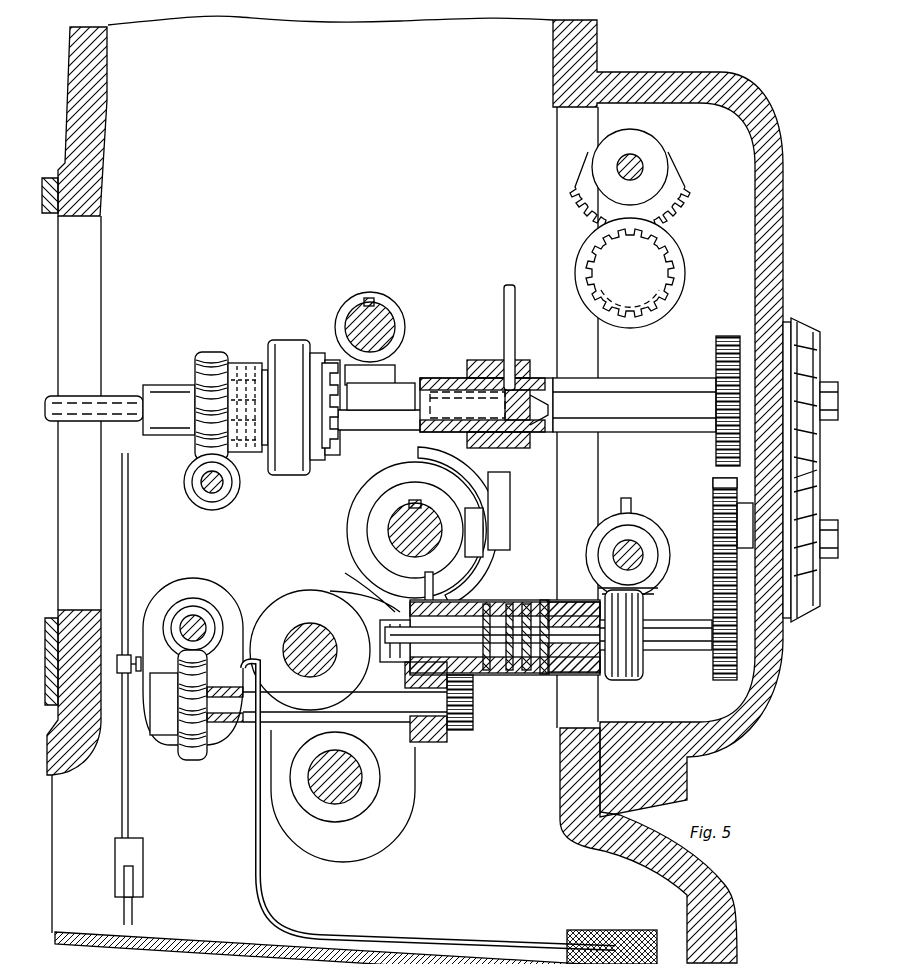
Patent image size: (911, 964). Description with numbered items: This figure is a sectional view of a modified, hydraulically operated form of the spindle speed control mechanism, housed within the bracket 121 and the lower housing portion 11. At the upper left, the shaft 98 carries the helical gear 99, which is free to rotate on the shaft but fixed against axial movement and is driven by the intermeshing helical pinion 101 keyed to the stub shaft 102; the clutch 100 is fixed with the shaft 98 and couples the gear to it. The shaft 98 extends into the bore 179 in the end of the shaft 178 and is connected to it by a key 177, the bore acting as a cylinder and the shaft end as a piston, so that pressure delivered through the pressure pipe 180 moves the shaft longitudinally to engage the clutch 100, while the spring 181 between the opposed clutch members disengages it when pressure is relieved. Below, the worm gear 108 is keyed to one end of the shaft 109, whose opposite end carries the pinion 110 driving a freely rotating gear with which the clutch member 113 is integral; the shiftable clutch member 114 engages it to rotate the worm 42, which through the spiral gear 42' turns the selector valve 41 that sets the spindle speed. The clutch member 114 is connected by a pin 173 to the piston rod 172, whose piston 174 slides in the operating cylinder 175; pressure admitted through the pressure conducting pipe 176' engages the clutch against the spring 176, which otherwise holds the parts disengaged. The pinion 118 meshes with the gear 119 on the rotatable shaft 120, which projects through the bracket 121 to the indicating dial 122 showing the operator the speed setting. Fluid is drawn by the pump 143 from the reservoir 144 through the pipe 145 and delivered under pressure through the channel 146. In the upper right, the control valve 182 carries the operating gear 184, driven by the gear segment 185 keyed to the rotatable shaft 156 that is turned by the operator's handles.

The housing leg 11 is at (735, 890).
The selector valve 41 is at (656, 548).
The worm 42 is at (633, 649).
The spiral gear 42' is at (649, 601).
The shaft 98 is at (108, 406).
The helical gear 99 is at (200, 380).
The clutch 100 is at (246, 364).
The helical pinion 101 is at (222, 508).
The stub shaft 102 is at (202, 488).
The worm gear 108 is at (185, 760).
The shaft 109 is at (228, 724).
The pinion 110 is at (460, 732).
The clutch member 113 is at (487, 672).
The shiftable clutch member 114 is at (525, 672).
The pinion 118 is at (724, 680).
The gear 119 is at (716, 478).
The rotatable shaft 120 is at (752, 516).
The bracket 121 is at (775, 210).
The indicating dial 122 is at (797, 618).
The pump 143 is at (210, 588).
The reservoir 144 is at (668, 950).
The pipe 145 is at (436, 934).
The channel 146 is at (130, 548).
The rotatable shaft 156 is at (635, 158).
The piston rod 172 is at (528, 604).
The pin 173 is at (546, 600).
The piston 174 is at (345, 576).
The operating cylinder 175 is at (380, 590).
The spring 176 is at (502, 537).
The pressure conducting pipe 176' is at (495, 542).
The key 177 is at (453, 378).
The shaft 178 is at (538, 386).
The bore 179 is at (522, 433).
The pressure pipe 180 is at (504, 320).
The spring 181 is at (255, 452).
The control valve 182 is at (686, 292).
The operating gear 184 is at (668, 258).
The gear segment 185 is at (590, 172).